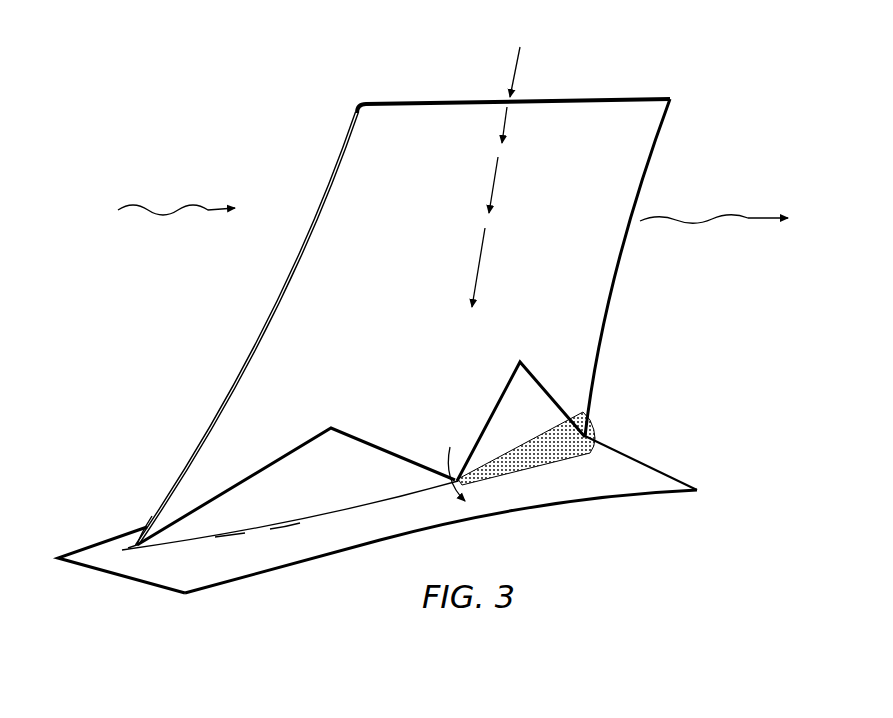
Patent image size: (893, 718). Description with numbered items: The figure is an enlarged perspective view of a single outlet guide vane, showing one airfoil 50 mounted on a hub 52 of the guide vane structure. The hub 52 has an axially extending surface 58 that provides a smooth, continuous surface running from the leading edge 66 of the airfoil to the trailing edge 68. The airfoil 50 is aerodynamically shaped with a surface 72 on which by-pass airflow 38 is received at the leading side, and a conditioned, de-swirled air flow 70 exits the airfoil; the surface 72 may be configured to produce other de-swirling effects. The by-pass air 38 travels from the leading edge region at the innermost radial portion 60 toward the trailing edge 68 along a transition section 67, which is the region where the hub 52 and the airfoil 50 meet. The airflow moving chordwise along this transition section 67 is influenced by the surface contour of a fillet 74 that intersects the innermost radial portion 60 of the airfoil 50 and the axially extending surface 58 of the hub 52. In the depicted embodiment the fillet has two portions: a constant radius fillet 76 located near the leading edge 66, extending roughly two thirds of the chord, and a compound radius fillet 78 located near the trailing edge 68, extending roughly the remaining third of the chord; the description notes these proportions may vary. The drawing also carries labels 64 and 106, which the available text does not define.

The by-pass airflow 38 is at (132, 202).
The airfoil 50 is at (415, 284).
The hub 52 is at (377, 549).
The axially extending surface 58 is at (520, 493).
The innermost radial portion 60 is at (170, 513).
The airfoil tip 64 is at (658, 110).
The leading edge 66 is at (185, 470).
The transition section 67 is at (295, 525).
The trailing edge 68 is at (590, 385).
The conditioned air flow 70 is at (715, 210).
The surface 72 is at (368, 190).
The fillet 74 is at (350, 513).
The constant radius fillet 76 is at (296, 462).
The compound radius fillet 78 is at (452, 433).
The fillet transition location 106 is at (232, 533).